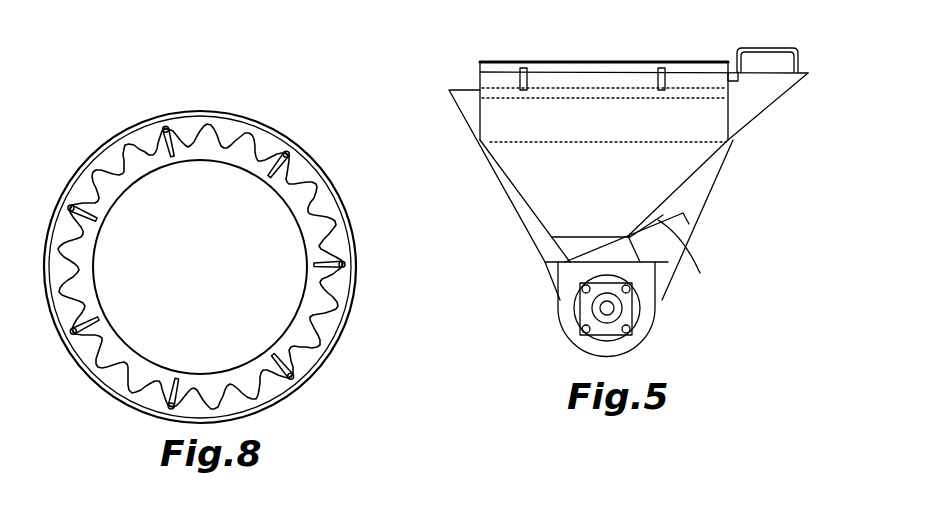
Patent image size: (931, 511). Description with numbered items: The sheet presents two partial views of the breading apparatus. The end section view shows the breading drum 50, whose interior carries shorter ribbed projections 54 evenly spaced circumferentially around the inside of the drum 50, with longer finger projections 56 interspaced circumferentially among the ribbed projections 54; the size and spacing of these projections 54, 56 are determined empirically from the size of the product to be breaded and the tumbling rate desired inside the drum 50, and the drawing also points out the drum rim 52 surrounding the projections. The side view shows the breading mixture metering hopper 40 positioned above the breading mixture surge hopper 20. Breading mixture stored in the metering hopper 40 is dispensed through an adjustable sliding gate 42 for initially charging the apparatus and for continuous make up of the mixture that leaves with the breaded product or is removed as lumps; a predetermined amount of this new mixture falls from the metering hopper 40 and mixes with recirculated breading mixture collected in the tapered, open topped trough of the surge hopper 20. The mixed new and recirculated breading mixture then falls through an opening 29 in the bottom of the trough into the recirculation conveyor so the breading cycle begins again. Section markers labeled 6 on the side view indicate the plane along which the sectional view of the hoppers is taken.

In FIG. 8, the breading drum 50 is at (128, 126).
In FIG. 8, the outer rim 52 is at (287, 138).
In FIG. 8, the ribbed projections 54 is at (227, 140).
In FIG. 8, the finger projections 56 is at (277, 183).
In FIG. 5, the section line 6- 6 is at (433, 34).
In FIG. 5, the breading mixture metering hopper 40 is at (575, 100).
In FIG. 5, the opening 29 is at (563, 238).
In FIG. 5, the adjustable sliding gate 42 is at (677, 254).
In FIG. 5, the breading mixture surge hopper 20 is at (664, 320).